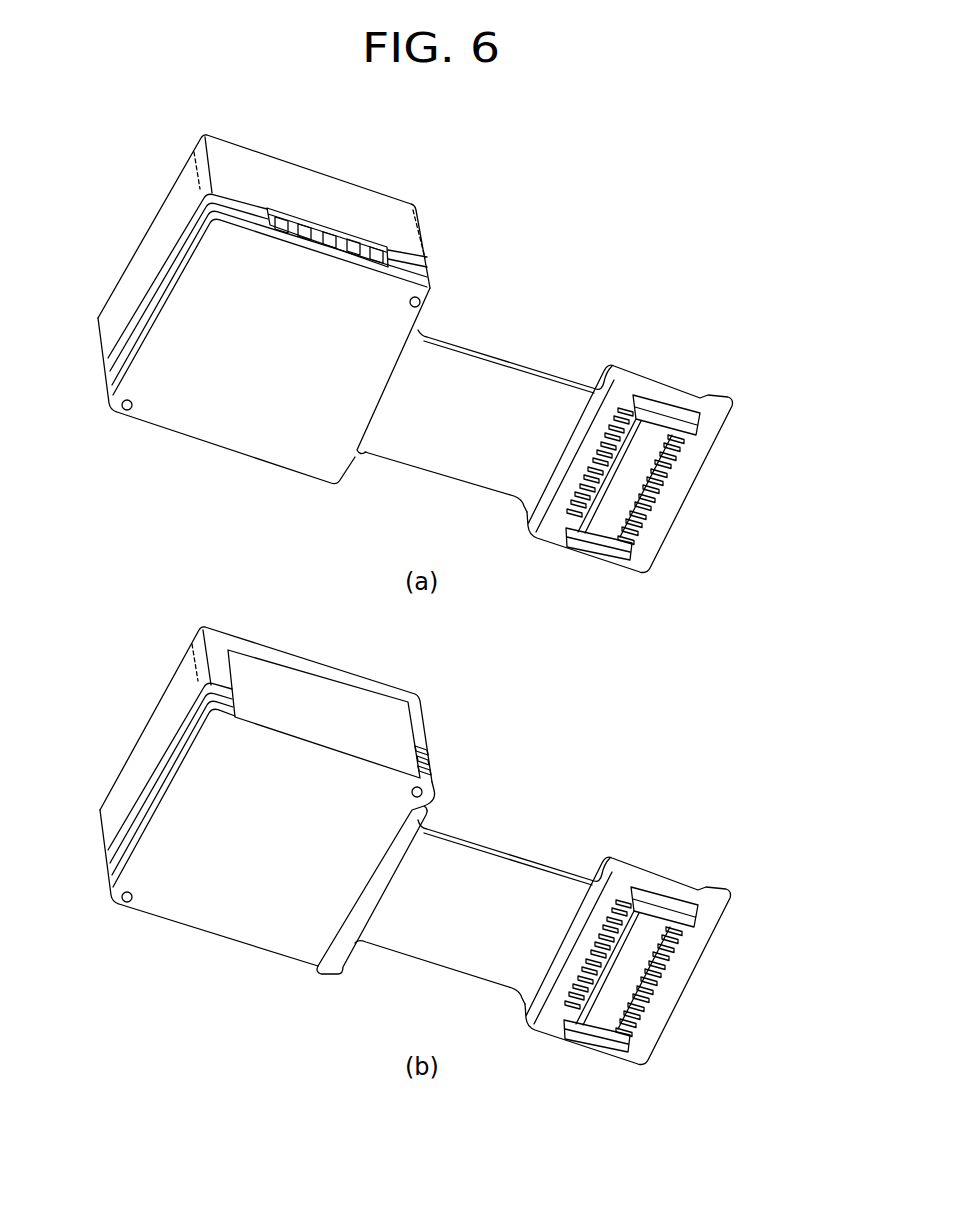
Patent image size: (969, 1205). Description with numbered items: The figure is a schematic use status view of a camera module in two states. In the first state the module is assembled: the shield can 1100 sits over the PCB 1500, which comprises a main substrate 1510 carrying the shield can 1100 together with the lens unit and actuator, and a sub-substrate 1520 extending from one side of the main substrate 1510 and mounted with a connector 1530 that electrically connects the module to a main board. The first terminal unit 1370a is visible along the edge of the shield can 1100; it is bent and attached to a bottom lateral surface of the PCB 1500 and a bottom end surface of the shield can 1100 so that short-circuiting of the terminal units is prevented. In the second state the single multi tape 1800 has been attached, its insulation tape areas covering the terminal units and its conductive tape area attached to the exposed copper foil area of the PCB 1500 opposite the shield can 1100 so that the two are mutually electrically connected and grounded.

The shield can 1100 is at (353, 202).
The first terminal unit 1370a is at (426, 252).
The PCB 1500 is at (180, 407).
The main substrate 1510 is at (245, 413).
The sub-substrate 1520 is at (627, 382).
The connector 1530 is at (673, 465).
The single multi tape 1800 is at (383, 722).